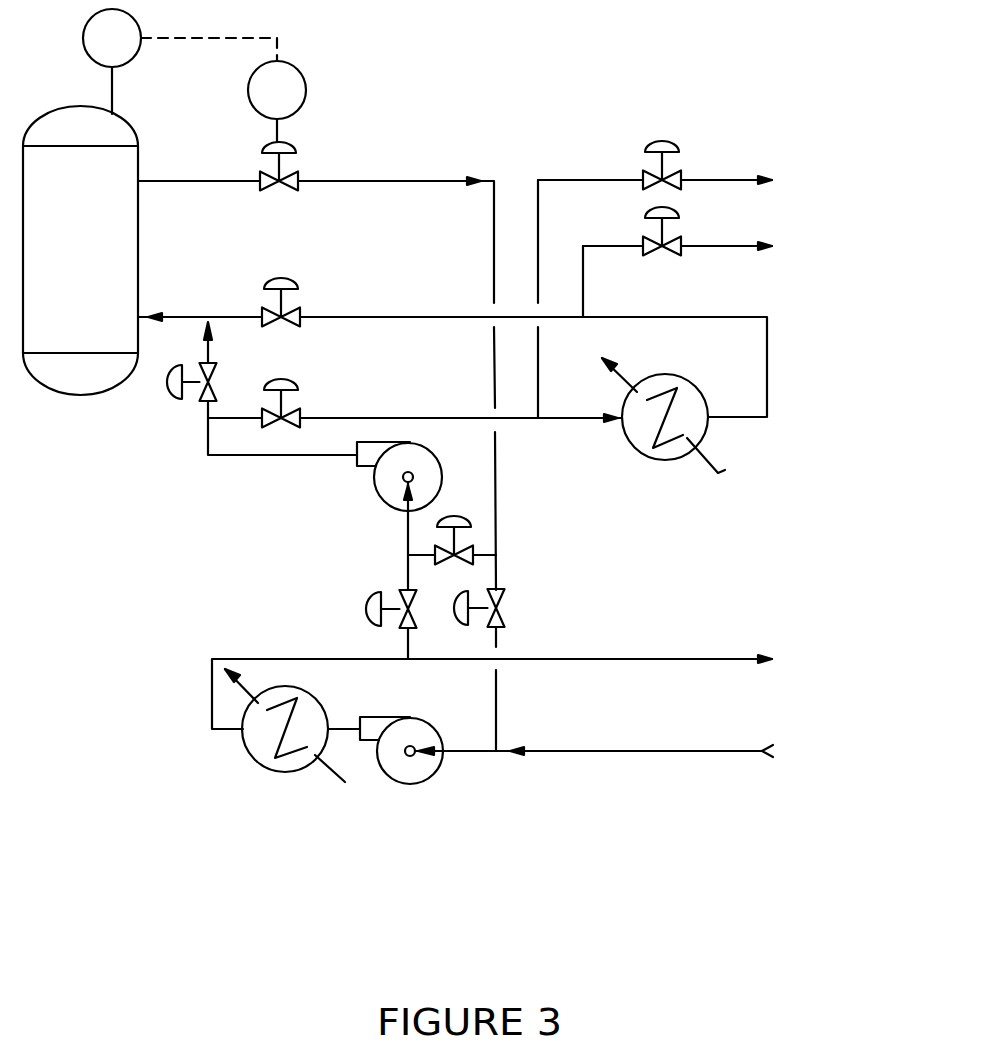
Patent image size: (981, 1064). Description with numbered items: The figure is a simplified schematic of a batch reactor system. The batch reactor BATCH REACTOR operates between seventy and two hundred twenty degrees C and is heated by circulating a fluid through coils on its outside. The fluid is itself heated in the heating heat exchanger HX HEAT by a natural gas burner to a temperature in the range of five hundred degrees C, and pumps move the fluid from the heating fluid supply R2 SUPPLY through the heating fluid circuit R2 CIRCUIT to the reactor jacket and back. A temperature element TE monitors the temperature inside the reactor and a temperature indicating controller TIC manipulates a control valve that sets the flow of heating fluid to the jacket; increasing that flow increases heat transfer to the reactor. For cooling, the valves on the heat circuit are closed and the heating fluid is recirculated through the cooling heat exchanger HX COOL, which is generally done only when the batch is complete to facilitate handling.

The batch reactor BATCH REACTOR is at (80, 250).
The temperature element TE is at (112, 61).
The temperature indicating controller TIC is at (277, 101).
The cooling heat exchanger HX COOL is at (663, 420).
The heating heat exchanger HX HEAT is at (285, 731).
The heating fluid supply R2 SUPPLY is at (825, 659).
The heating fluid circuit R2 CIRCUIT is at (827, 466).